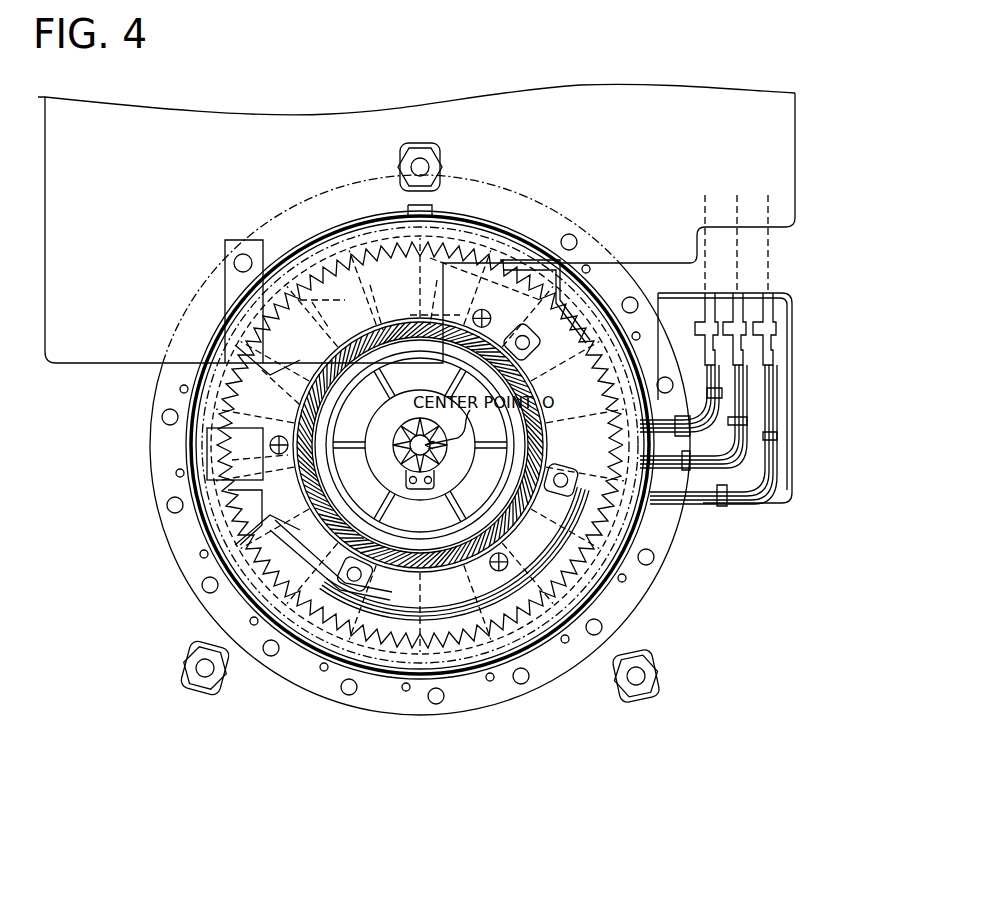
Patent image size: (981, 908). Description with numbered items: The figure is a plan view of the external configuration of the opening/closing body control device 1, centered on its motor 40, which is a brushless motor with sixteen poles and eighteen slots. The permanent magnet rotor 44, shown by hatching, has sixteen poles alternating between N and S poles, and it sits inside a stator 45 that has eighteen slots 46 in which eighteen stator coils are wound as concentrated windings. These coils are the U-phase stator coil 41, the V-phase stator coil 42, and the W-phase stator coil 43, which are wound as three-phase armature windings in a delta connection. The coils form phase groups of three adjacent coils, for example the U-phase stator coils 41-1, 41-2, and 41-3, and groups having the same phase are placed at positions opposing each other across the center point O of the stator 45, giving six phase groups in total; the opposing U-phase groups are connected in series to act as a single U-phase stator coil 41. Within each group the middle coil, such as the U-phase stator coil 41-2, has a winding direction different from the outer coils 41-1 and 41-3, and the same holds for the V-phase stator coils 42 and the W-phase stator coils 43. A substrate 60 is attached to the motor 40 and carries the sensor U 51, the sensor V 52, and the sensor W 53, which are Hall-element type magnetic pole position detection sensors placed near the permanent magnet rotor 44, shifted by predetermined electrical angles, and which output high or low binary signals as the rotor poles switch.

The opening/closing body control device 1 is at (722, 688).
The motor 40 is at (352, 449).
The U-phase stator coil 41 is at (360, 222).
The U-phase stator coil 41-1 is at (300, 263).
The U-phase stator coil 41-2 is at (350, 232).
The U-phase stator coil 41-3 is at (447, 232).
The V-phase stator coil 42 is at (193, 383).
The W-phase stator coil 43 is at (618, 263).
The permanent magnet rotor 44 is at (375, 570).
The stator 45 is at (238, 425).
The slot 46 is at (240, 487).
The sensor U 51 is at (377, 294).
The sensor V 52 is at (322, 307).
The sensor W 53 is at (435, 292).
The substrate 60 is at (765, 165).